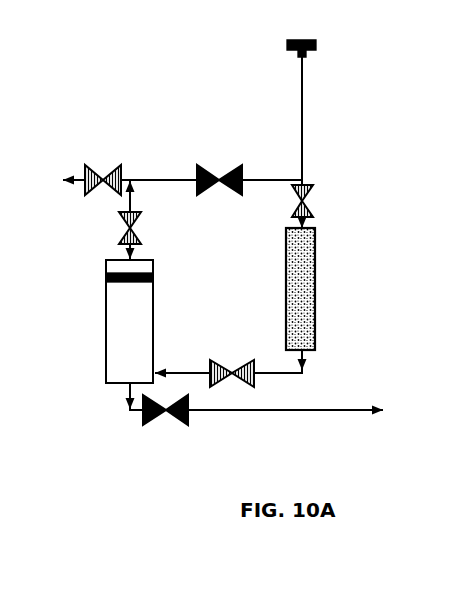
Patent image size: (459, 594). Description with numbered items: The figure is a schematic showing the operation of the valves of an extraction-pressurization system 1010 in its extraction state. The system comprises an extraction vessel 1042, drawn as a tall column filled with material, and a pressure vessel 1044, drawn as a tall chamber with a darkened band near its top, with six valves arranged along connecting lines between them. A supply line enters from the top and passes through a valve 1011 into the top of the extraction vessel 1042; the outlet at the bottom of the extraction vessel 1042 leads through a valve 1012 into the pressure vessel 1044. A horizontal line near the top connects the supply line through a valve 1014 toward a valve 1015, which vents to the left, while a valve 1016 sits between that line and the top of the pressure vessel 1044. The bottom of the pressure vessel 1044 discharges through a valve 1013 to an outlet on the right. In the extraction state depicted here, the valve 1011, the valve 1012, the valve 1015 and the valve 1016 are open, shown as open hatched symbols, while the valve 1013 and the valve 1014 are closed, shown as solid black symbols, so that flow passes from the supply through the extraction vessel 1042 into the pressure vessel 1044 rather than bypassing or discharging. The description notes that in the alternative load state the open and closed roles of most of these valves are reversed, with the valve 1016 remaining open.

The extraction-pressurization system 1010 is at (385, 76).
The valve 1011 is at (323, 191).
The valve 1012 is at (227, 356).
The valve 1013 is at (154, 433).
The valve 1014 is at (222, 147).
The valve 1015 is at (105, 161).
The valve 1016 is at (117, 213).
The extraction vessel 1042 is at (334, 317).
The pressure vessel 1044 is at (84, 347).